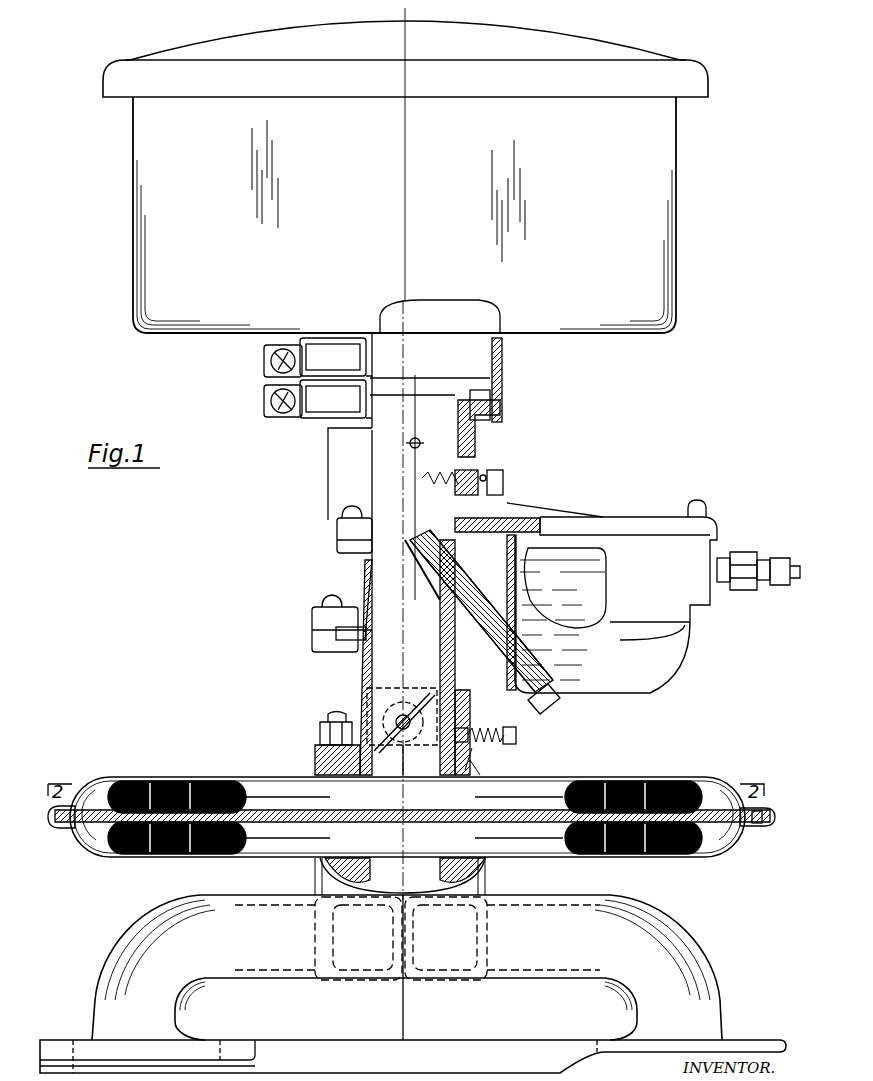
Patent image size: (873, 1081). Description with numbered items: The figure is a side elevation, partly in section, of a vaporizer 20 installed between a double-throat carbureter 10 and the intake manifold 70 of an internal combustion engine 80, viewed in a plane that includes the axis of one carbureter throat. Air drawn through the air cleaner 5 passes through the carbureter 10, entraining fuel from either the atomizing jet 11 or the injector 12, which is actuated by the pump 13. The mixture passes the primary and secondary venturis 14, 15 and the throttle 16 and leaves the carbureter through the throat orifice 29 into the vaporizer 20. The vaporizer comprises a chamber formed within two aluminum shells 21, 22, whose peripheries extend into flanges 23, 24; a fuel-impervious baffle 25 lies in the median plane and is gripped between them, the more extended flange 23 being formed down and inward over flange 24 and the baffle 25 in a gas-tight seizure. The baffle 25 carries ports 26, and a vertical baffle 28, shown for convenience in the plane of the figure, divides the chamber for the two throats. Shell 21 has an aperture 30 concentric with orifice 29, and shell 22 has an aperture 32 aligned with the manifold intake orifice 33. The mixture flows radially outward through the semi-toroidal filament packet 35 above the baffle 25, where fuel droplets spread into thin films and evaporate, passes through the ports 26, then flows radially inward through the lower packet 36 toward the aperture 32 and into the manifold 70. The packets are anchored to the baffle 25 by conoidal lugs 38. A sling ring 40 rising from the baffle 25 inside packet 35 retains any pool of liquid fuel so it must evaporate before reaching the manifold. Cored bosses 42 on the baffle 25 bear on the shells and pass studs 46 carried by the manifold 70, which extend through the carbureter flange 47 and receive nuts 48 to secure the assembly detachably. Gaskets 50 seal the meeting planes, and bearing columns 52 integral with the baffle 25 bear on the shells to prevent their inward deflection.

The air cleaner 5 is at (152, 219).
The carbureter 10 is at (630, 527).
The atomizing jet 11 is at (413, 546).
The injector 12 is at (380, 560).
The pump 13 is at (483, 497).
The primary venturi 14 is at (395, 583).
The secondary venturi 15 is at (388, 669).
The throttle 16 is at (425, 705).
The vaporizer 20 is at (100, 788).
The shell 21 is at (170, 780).
The shell 22 is at (190, 853).
The flange 23 is at (748, 818).
The flange 24 is at (762, 822).
The baffle 25 is at (562, 842).
The ports 26 is at (88, 800).
The vertical baffle 28 is at (255, 780).
The carbureter throat orifice 29 is at (422, 760).
The aperture 30 is at (398, 803).
The aperture 32 is at (398, 814).
The intake orifice 33 is at (420, 879).
The packet 35 is at (128, 780).
The packet 36 is at (112, 852).
The conoidal lugs 38 is at (140, 853).
The sling ring 40 is at (566, 792).
The cored bosses 42 is at (322, 808).
The studs 46 is at (316, 904).
The carbureter flange 47 is at (320, 752).
The nuts 48 is at (335, 722).
The gasket 50 is at (483, 774).
The bearing columns 52 is at (442, 815).
The intake manifold 70 is at (125, 946).
The engine 80 is at (388, 1080).